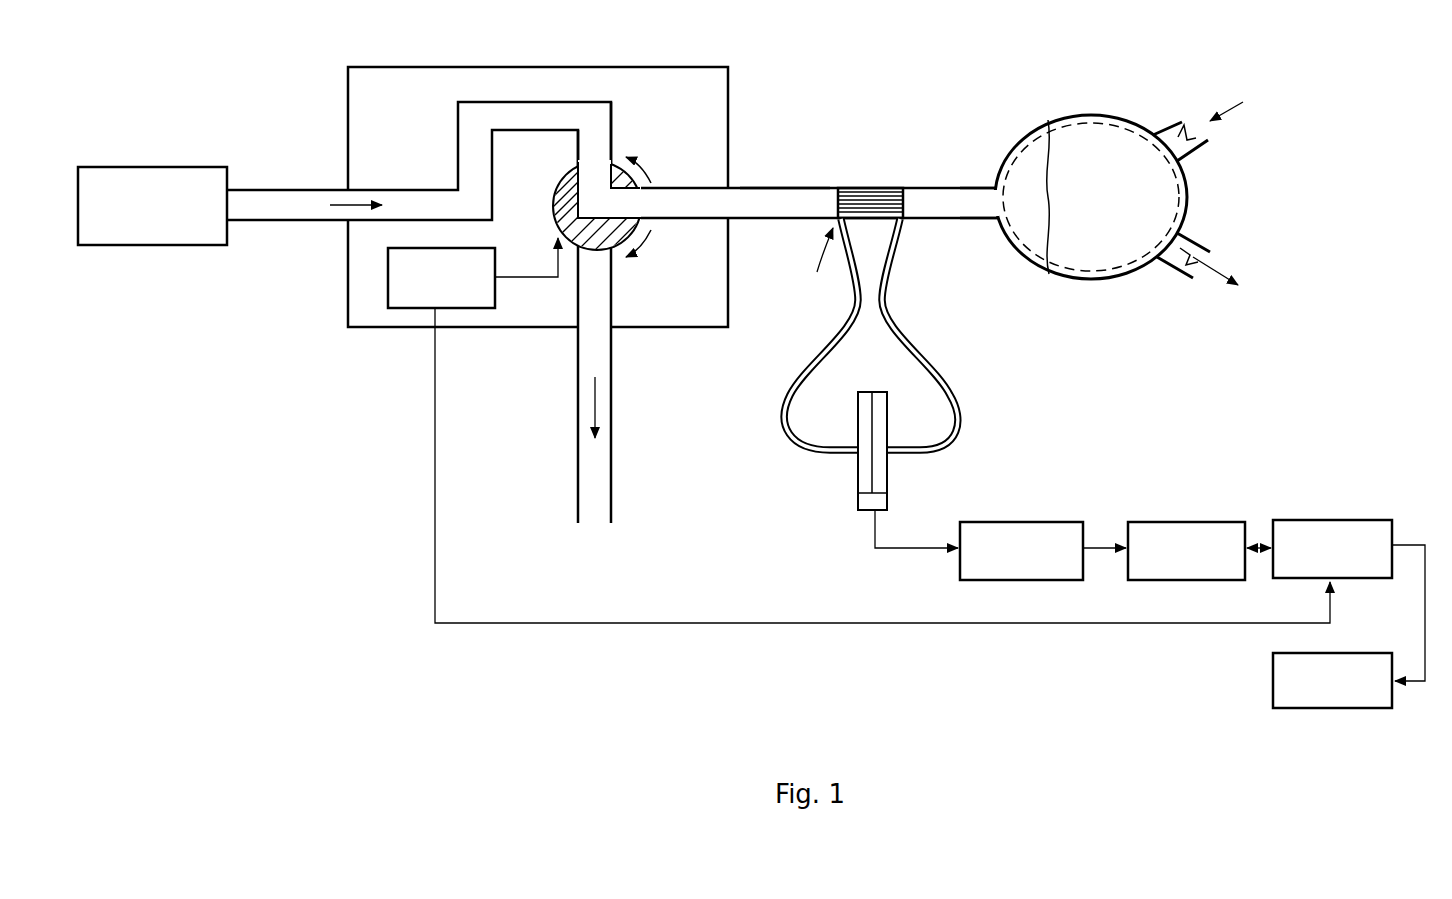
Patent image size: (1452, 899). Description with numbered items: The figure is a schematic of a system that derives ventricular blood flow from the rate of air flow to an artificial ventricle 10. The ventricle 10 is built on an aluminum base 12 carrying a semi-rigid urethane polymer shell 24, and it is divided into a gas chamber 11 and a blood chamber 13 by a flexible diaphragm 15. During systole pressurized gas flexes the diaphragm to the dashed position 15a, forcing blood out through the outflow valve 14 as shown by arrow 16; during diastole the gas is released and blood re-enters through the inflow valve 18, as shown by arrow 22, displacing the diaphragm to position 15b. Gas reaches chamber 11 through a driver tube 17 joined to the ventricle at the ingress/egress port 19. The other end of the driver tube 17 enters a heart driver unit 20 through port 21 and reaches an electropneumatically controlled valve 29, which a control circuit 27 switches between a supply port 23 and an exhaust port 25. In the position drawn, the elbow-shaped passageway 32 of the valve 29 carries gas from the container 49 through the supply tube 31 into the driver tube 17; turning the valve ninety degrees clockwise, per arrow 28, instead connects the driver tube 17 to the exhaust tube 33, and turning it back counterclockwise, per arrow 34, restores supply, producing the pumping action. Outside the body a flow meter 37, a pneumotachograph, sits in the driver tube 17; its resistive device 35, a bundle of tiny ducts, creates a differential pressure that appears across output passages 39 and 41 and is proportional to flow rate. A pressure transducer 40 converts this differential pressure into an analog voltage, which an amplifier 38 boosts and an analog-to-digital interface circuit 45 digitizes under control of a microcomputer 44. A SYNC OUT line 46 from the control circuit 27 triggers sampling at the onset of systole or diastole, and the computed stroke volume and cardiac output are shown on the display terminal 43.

The artificial ventricle 10 is at (1095, 94).
The pressurized gas chamber 11 is at (1028, 207).
The aluminum base 12 is at (1016, 254).
The blood chamber 13 is at (1106, 210).
The outflow valve 14 is at (1183, 262).
The flexible diaphragm 15 is at (1049, 187).
The diaphragm systole position 15a is at (1153, 239).
The diaphragm diastole position 15b is at (1018, 147).
The outflow arrow 16 is at (1228, 276).
The driver tube 17 is at (766, 185).
The inflow valve 18 is at (1177, 134).
The ingress/egress port 19 is at (990, 215).
The heart driver unit 20 is at (583, 57).
The port 21 is at (729, 185).
The inflow arrow 22 is at (1212, 112).
The systole (supply) port 23 is at (598, 133).
The semi-rigid urethane polymer shell 24 is at (1188, 198).
The diastole (exhaust) port 25 is at (598, 291).
The control circuit 27 is at (497, 287).
The clockwise rotation arrow 28 is at (647, 233).
The electropneumatically controlled valve 29 is at (560, 187).
The supply tube 31 is at (310, 222).
The elbow-shaped passageway 32 is at (606, 213).
The exhaust tube 33 is at (612, 405).
The counterclockwise rotation arrow 34 is at (648, 160).
The resistive device 35 is at (905, 196).
The flow meter 37 is at (812, 255).
The amplifier 38 is at (1008, 522).
The pneumotachograph output passage 39 is at (853, 290).
The pressure transducer 40 is at (888, 465).
The pneumotachograph output passage 41 is at (882, 285).
The display terminal 43 is at (1337, 653).
The microcomputer 44 is at (1310, 520).
The analog-to-digital interface circuit 45 is at (1175, 520).
The SYNC OUT line 46 is at (719, 620).
The pressurized gas container 49 is at (170, 166).